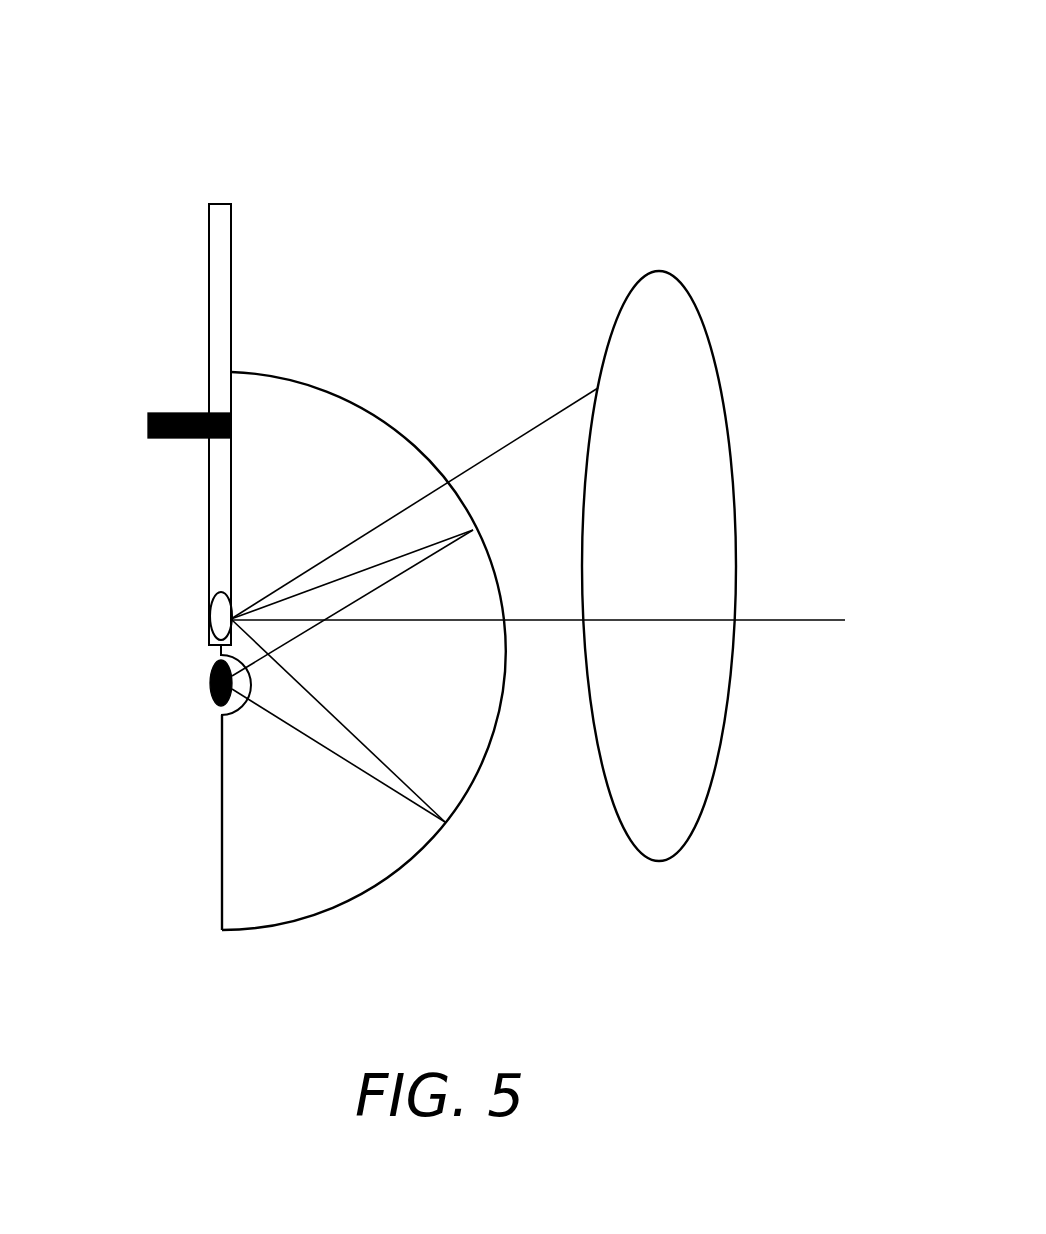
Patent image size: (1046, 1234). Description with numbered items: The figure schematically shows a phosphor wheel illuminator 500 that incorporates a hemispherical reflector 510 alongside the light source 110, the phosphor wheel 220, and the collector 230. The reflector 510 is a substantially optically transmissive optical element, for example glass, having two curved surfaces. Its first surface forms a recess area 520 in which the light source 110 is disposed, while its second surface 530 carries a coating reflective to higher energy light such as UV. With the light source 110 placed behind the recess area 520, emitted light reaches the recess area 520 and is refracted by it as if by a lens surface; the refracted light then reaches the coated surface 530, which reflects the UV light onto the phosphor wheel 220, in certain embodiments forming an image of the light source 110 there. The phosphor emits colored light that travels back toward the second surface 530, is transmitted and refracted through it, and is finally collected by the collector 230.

The phosphor wheel illuminator 500 is at (598, 128).
The phosphor wheel 220 is at (197, 282).
The second surface 530 is at (360, 392).
The reflector 510 is at (421, 888).
The collector 230 is at (752, 382).
The light source 110 is at (192, 690).
The recess area 520 is at (241, 710).